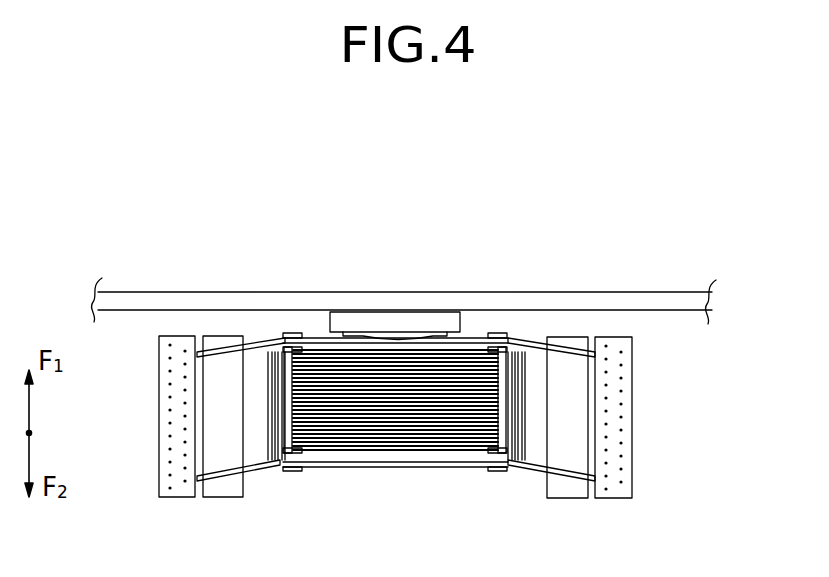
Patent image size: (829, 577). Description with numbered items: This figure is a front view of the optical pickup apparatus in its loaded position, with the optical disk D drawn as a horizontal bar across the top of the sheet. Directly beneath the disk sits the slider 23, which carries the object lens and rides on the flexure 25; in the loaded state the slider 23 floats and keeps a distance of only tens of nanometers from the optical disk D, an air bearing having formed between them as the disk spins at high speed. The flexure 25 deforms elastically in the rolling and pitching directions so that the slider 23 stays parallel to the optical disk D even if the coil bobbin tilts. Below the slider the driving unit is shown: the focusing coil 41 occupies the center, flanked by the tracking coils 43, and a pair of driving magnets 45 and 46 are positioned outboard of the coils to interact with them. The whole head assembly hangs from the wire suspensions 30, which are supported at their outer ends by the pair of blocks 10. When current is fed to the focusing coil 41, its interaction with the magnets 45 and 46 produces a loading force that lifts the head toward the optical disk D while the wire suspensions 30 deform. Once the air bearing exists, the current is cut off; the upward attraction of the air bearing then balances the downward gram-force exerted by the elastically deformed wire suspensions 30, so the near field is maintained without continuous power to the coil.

The optical disk D is at (668, 293).
The slider 23 is at (355, 312).
The flexure 25 is at (442, 331).
The wire suspensions 30 is at (582, 338).
The focusing coil 41 is at (385, 440).
The tracking coils 43 is at (277, 463).
The driving magnet 45 is at (572, 492).
The driving magnet 46 is at (217, 493).
The block 10 is at (632, 427).